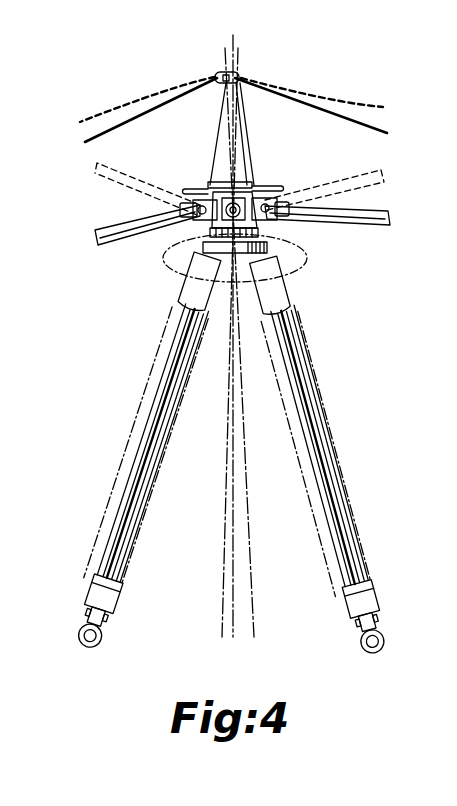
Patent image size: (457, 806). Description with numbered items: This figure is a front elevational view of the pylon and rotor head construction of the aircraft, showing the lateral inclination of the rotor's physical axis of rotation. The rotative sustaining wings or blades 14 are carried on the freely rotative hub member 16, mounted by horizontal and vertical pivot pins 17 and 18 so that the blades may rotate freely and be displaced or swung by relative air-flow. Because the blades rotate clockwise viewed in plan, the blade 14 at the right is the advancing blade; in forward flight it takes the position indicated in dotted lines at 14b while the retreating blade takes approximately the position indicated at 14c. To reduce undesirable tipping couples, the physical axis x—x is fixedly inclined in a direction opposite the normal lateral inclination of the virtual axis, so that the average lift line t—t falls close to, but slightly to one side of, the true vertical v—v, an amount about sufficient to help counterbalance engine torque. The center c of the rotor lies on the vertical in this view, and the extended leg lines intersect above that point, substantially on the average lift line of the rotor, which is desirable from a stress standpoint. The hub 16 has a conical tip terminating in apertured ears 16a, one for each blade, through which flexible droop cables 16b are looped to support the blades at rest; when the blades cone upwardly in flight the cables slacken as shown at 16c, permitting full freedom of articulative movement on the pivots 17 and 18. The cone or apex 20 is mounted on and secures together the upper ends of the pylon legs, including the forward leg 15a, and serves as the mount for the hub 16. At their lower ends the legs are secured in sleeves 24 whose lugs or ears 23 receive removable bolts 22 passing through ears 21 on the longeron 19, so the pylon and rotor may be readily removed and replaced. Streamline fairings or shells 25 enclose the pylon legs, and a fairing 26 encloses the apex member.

The rotative sustaining wings or blades 14 is at (108, 236).
The advancing blade position 14b is at (330, 190).
The retreating blade position 14c is at (95, 165).
The forward pylon leg 15a is at (158, 413).
The rotative hub member 16 is at (252, 178).
The apertured ears 16a is at (217, 75).
The flexible droop cables 16b is at (128, 121).
The slackened droop cables 16c is at (157, 97).
The horizontal pivot pin 17 is at (188, 206).
The vertical pivot pin 18 is at (203, 193).
The longeron 19 is at (85, 645).
The cone or apex 20 is at (205, 257).
The ears 21 is at (98, 647).
The removable bolts 22 is at (107, 624).
The lugs or ears of sleeves 23 is at (88, 618).
The sleeves 24 is at (115, 610).
The streamline fairings or shells 25 is at (128, 473).
The apex fairing or shell 26 is at (290, 276).
The center of the rotor c is at (270, 205).
The vertical line v—v V is at (235, 340).
The physical axis of rotation x— x is at (238, 348).
The lift line t— t is at (231, 349).